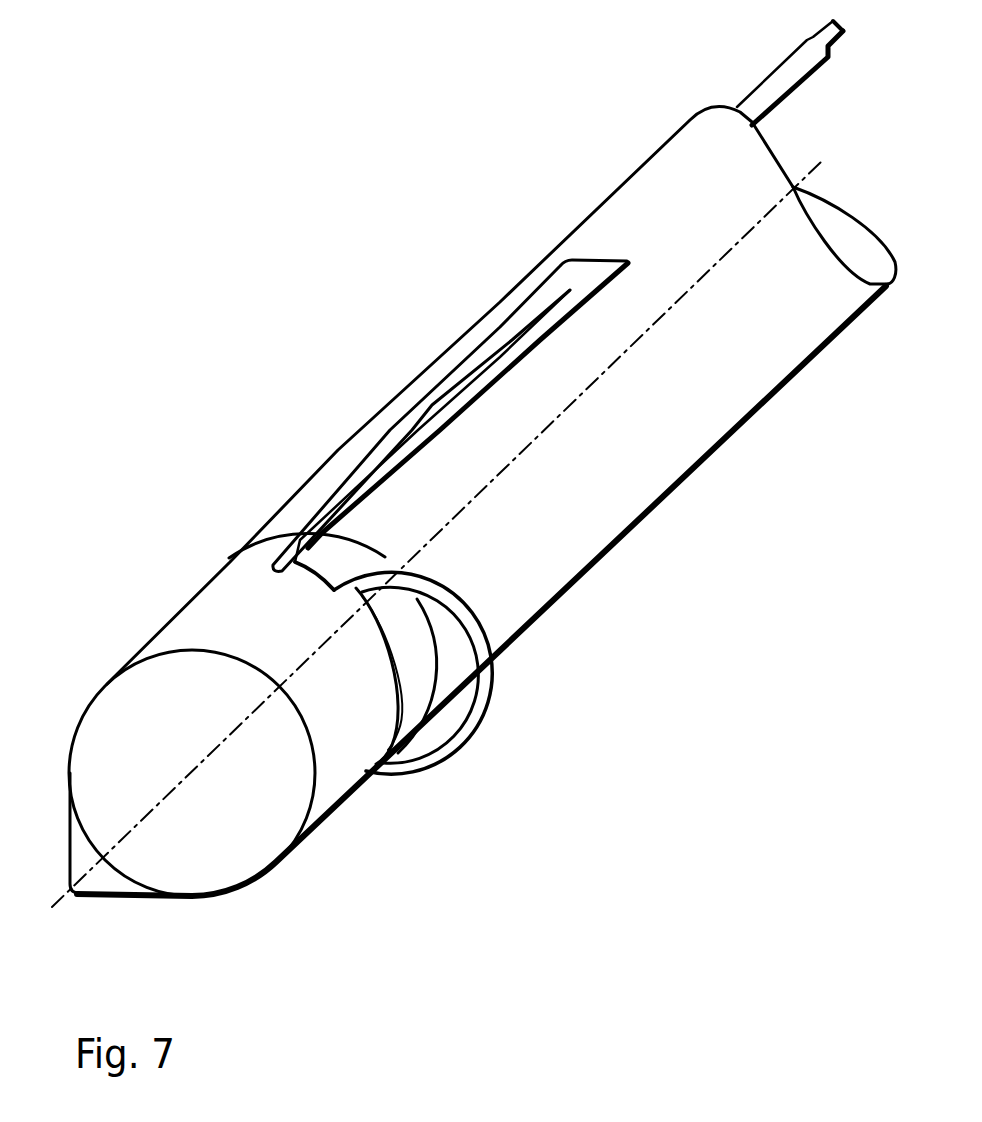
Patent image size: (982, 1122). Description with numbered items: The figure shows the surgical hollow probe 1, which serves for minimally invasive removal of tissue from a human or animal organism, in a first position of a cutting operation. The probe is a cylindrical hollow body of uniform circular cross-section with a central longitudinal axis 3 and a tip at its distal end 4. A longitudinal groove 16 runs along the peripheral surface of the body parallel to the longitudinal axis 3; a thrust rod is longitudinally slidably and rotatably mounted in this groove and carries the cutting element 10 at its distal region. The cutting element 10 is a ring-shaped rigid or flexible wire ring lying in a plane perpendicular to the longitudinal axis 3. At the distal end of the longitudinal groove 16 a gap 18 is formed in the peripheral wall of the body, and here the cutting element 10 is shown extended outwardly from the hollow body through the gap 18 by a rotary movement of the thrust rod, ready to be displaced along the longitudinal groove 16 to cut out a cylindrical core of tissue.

The hollow probe 1 is at (350, 273).
The central longitudinal axis 3 is at (200, 763).
The distal end 4 is at (216, 895).
The cutting element 10 is at (490, 707).
The longitudinal groove 16 is at (410, 447).
The gap 18 is at (397, 682).